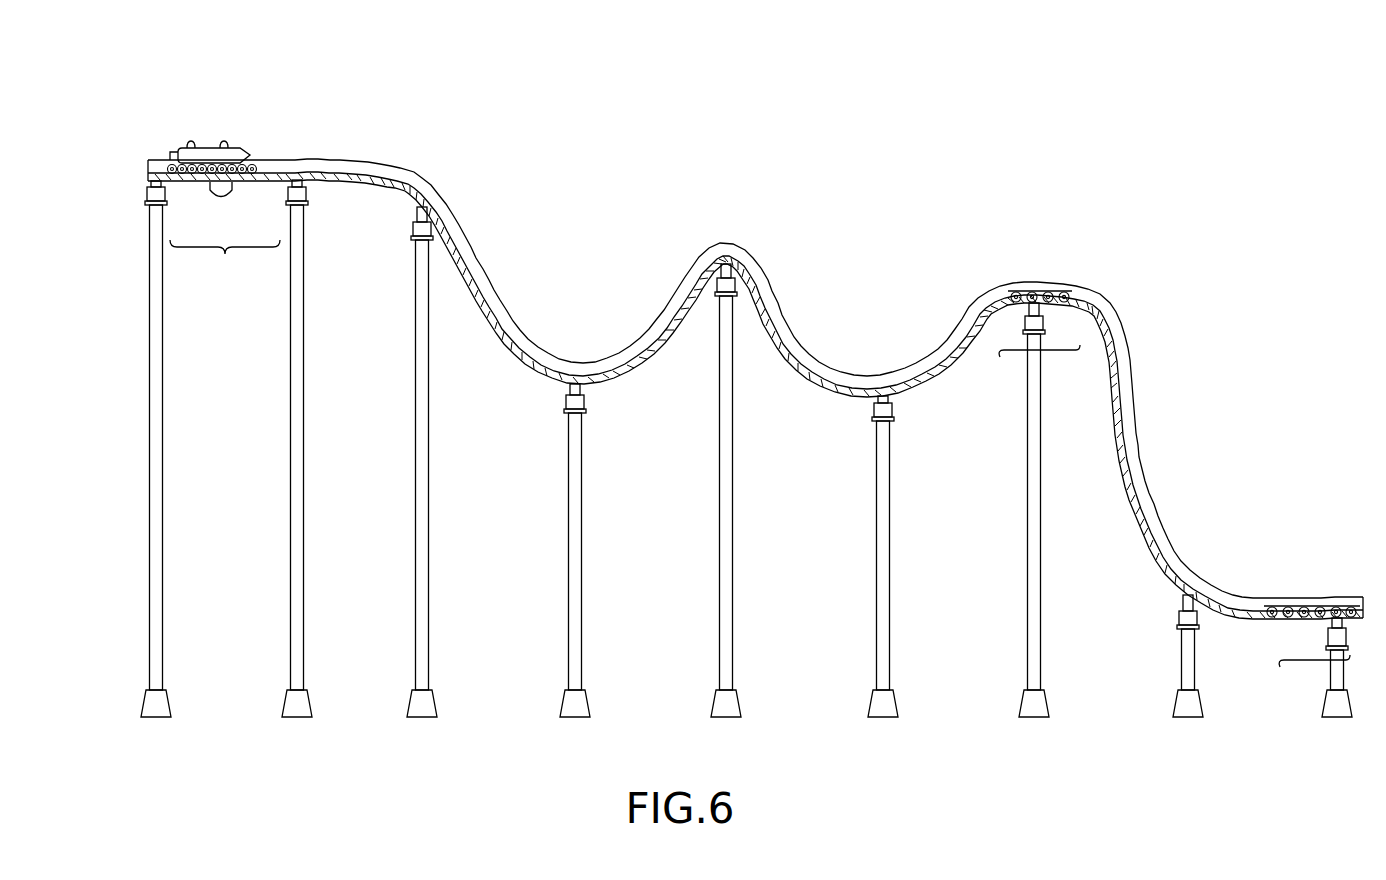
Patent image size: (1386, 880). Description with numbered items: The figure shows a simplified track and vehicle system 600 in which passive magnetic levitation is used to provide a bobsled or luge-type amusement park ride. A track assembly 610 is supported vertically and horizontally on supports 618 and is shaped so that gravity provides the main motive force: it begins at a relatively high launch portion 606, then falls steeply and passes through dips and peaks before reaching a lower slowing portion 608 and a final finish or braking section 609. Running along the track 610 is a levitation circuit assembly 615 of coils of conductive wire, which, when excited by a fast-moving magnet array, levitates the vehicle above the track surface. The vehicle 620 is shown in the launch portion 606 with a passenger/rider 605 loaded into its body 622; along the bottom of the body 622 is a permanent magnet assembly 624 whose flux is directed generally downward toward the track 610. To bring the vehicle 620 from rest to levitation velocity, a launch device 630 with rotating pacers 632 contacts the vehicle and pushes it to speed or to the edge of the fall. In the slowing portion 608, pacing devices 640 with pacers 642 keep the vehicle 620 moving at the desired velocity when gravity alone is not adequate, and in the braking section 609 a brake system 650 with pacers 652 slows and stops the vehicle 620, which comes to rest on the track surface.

The track and vehicle system 600 is at (1240, 243).
The passenger/rider 605 is at (192, 147).
The launch portion 606 is at (225, 262).
The slowing portion 608 is at (1012, 352).
The finish or braking section 609 is at (1310, 662).
The track assembly 610 is at (777, 278).
The levitation circuit assembly 615 is at (810, 358).
The supports 618 is at (890, 468).
The vehicle 620 is at (252, 143).
The body 622 is at (214, 160).
The permanent magnet assembly 624 is at (250, 160).
The launch device 630 is at (164, 156).
The pacers 632 is at (234, 206).
The pacing devices 640 is at (1062, 280).
The pacers 642 is at (1088, 294).
The brake system 650 is at (1313, 582).
The pacers 652 is at (1338, 608).